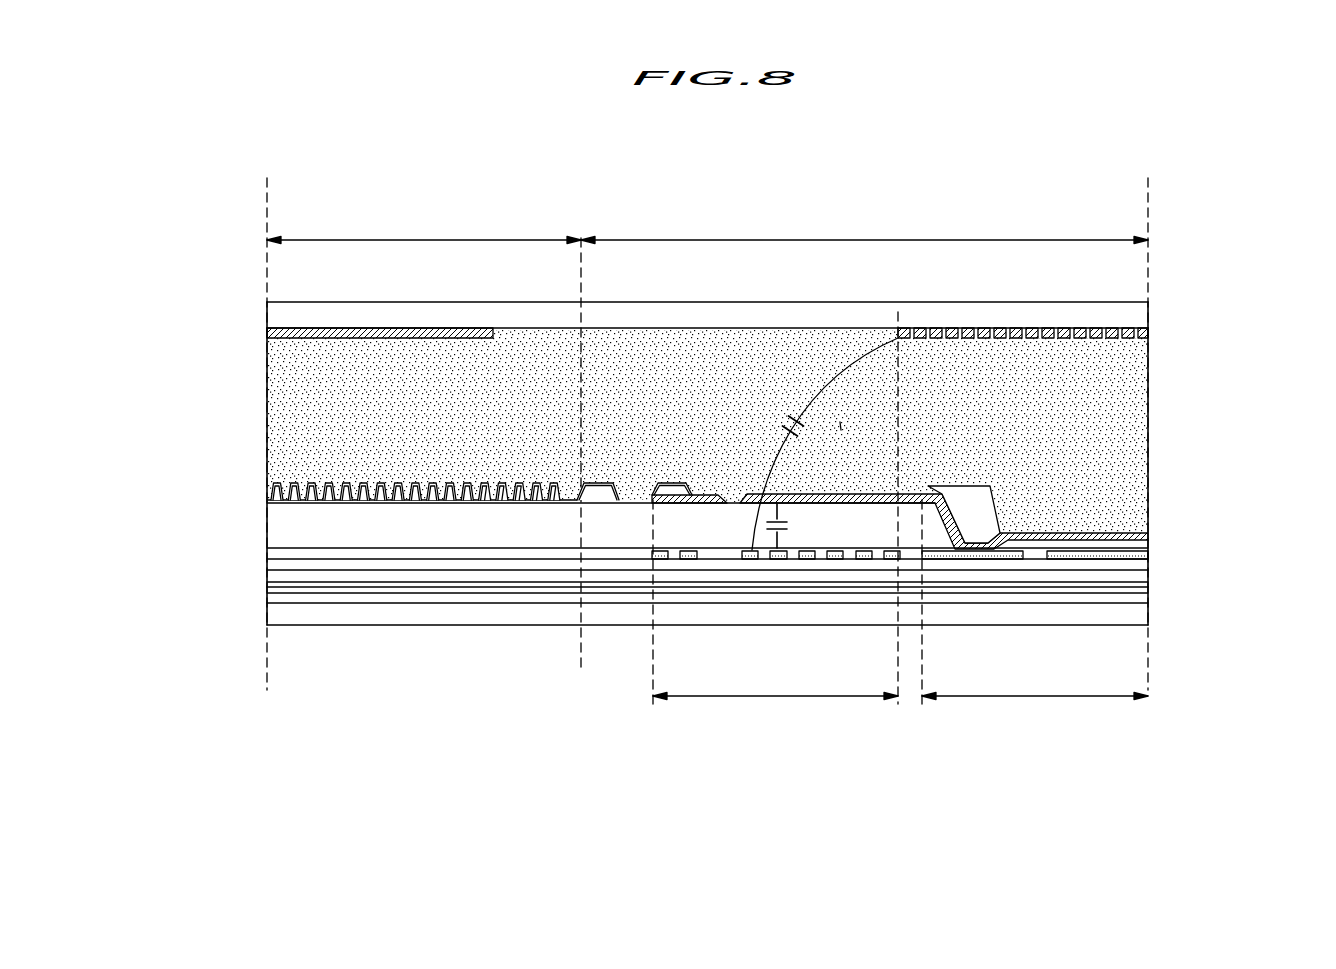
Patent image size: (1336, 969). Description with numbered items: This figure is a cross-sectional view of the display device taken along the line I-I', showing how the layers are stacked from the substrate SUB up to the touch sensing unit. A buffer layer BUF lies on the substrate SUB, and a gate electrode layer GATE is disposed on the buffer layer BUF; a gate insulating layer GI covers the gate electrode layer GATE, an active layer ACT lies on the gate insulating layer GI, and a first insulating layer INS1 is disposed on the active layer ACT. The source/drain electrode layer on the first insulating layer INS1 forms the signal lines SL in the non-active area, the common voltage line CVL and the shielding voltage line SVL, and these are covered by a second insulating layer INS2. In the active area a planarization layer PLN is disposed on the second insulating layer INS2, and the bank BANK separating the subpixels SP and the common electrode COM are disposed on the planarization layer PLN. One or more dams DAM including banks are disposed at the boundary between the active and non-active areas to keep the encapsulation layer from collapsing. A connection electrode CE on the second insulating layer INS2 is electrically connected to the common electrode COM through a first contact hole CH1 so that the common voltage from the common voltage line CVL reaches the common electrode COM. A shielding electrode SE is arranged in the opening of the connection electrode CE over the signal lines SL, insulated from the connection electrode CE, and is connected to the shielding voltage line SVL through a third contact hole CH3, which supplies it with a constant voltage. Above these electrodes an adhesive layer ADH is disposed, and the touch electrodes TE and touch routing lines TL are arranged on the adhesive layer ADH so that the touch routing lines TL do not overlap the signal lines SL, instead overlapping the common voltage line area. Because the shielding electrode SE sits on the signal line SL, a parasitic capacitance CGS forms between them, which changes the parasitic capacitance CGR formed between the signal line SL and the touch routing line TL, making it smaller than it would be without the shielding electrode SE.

The touch electrode TE is at (390, 329).
The dam DAM is at (672, 493).
The first contact hole CH1 is at (706, 485).
The touch routing line TL is at (1148, 336).
The adhesive layer ADH is at (1148, 395).
The bank BANK is at (972, 489).
The third contact hole CH3 is at (978, 532).
The second insulating layer INS2 is at (1148, 537).
The first insulating layer INS1 is at (1148, 560).
The active layer ACT is at (1148, 575).
The gate insulating layer GI is at (1148, 585).
The gate electrode layer GATE is at (1148, 592).
The subpixel SP is at (345, 480).
The common electrode COM is at (300, 482).
The planarization layer PLN is at (273, 525).
The buffer layer BUF is at (275, 594).
The substrate SUB is at (275, 614).
The connection electrode CE is at (712, 503).
The signal line SL is at (833, 559).
The shielding electrode SE is at (925, 498).
The shielding voltage line SVL is at (998, 559).
The common voltage line CVL is at (1090, 559).
The parasitic capacitance between signal line and shielding electrode CGS is at (801, 525).
The parasitic capacitance between signal line and touch routing line CGR is at (825, 444).
The section line I is at (266, 421).
The section line I' is at (1148, 421).